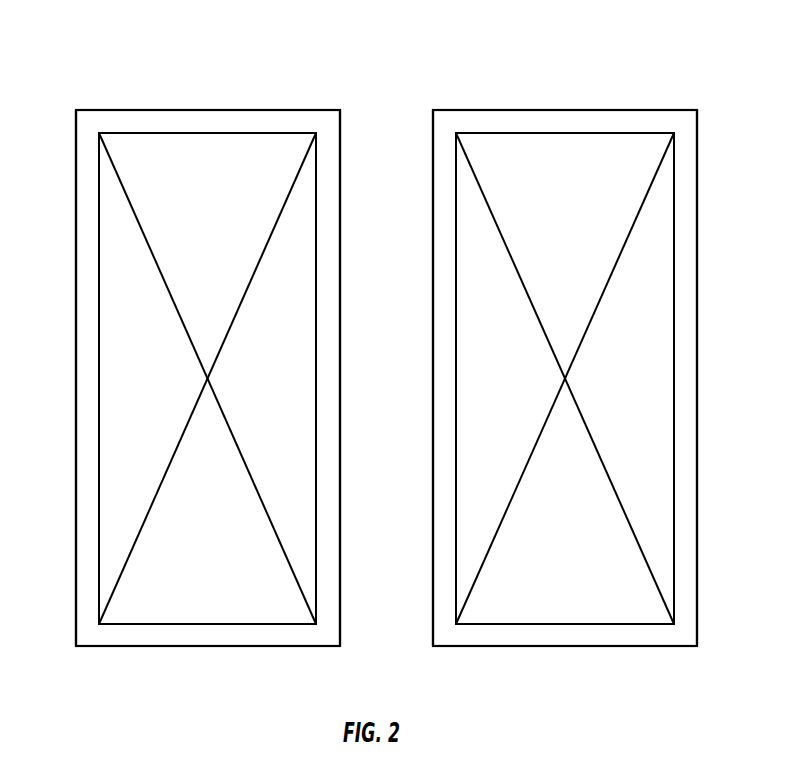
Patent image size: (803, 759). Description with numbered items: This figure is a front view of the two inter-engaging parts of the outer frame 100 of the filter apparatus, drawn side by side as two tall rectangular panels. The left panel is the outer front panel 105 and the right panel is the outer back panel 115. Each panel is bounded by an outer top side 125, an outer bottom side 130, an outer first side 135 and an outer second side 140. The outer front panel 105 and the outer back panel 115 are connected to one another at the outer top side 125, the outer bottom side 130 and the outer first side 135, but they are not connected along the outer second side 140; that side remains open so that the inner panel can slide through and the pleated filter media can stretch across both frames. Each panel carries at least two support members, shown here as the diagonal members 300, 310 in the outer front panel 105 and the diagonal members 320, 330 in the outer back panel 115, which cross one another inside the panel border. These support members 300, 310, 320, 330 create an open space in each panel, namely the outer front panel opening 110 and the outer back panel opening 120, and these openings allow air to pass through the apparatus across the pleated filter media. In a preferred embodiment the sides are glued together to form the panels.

The outer frame 100 is at (86, 62).
The outer front panel 105 is at (92, 109).
The outer back panel 115 is at (680, 109).
The outer front panel opening 110 is at (128, 373).
The outer back panel opening 120 is at (645, 373).
The outer top side 125 is at (208, 109).
The outer bottom side 130 is at (207, 648).
The outer first side 135 is at (77, 343).
The outer second side 140 is at (341, 302).
The support member 300 is at (129, 556).
The support member 310 is at (130, 203).
The support member 320 is at (644, 556).
The support member 330 is at (643, 203).